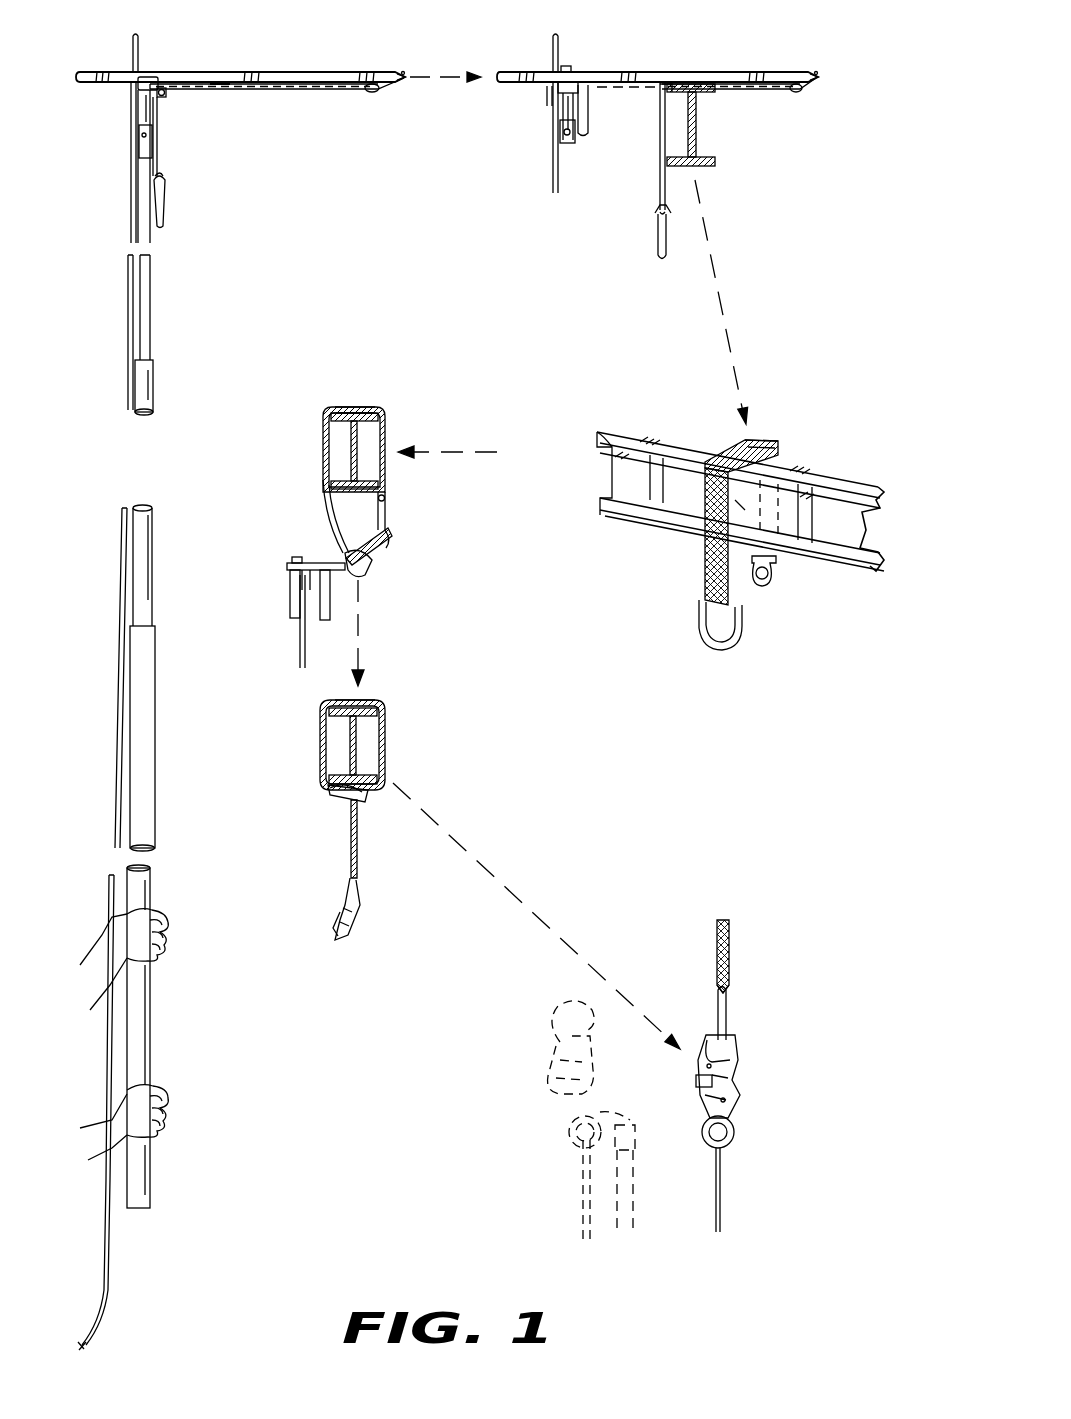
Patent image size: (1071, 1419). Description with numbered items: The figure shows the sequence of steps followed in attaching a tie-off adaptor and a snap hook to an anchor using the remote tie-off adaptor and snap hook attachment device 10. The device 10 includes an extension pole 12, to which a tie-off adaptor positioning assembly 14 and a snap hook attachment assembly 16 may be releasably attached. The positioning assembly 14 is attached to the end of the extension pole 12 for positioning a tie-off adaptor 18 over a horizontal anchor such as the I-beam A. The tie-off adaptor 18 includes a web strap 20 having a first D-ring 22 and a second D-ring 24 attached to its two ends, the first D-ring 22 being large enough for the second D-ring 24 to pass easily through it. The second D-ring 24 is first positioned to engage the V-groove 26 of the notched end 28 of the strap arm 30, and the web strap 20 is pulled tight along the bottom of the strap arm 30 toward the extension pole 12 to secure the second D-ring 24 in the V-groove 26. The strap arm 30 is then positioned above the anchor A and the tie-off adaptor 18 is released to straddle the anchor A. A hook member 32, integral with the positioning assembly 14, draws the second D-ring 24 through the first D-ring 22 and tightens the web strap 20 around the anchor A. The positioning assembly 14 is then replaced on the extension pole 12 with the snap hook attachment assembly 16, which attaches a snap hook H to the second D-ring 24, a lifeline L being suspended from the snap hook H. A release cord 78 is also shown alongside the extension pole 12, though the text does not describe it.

The remote tie-off adaptor and snap hook attachment device 10 is at (255, 208).
The extension pole 12 is at (150, 1018).
The tie-off adaptor positioning assembly 14 is at (154, 54).
The snap hook attachment assembly 16 is at (640, 1132).
The tie-off adaptor 18 is at (289, 92).
The web strap 20 is at (208, 92).
The first D-ring 22 is at (167, 215).
The second D-ring 24 is at (377, 93).
The V-groove 26 is at (404, 83).
The notched end 28 is at (402, 72).
The strap arm 30 is at (242, 72).
The hook member 32 is at (133, 58).
The release cord 78 is at (130, 188).
The I-beam A is at (718, 163).
The snap hook H is at (740, 1075).
The lifeline L is at (732, 1190).